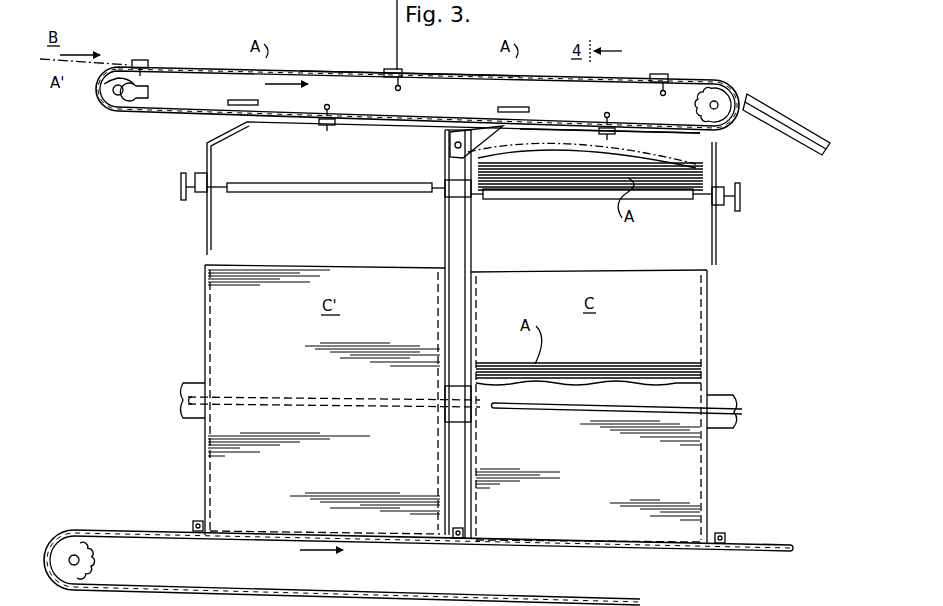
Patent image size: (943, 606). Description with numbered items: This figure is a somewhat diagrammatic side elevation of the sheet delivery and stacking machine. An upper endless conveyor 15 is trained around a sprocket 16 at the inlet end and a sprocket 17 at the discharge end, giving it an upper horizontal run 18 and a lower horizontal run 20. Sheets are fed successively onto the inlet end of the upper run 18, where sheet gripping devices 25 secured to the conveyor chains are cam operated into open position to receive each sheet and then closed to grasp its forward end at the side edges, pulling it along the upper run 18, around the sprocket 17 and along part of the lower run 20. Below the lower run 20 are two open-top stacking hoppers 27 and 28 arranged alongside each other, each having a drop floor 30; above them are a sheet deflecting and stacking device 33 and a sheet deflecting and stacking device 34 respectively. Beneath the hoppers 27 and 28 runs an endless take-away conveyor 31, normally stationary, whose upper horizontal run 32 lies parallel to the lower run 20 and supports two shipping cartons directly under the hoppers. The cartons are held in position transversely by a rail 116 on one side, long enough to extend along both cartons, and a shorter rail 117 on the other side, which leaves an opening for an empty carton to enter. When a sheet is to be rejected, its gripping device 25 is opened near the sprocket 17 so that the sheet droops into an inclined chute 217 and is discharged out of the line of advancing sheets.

The upper endless conveyor 15 is at (160, 118).
The sprocket 16 is at (118, 103).
The sprocket 17 is at (717, 94).
The upper horizontal run 18 is at (418, 84).
The lower horizontal run 20 is at (563, 122).
The sheet gripping device 25 is at (143, 58).
The stacking hopper 27 is at (673, 155).
The stacking hopper 28 is at (338, 153).
The drop floor 30 is at (398, 192).
The endless take-away conveyor 31 is at (147, 529).
The upper horizontal run 32 is at (262, 541).
The sheet deflecting and stacking device 33 is at (503, 126).
The sheet deflecting and stacking device 34 is at (268, 122).
The rail 116 is at (332, 386).
The rail 117 is at (742, 406).
The inclined chute 217 is at (778, 132).